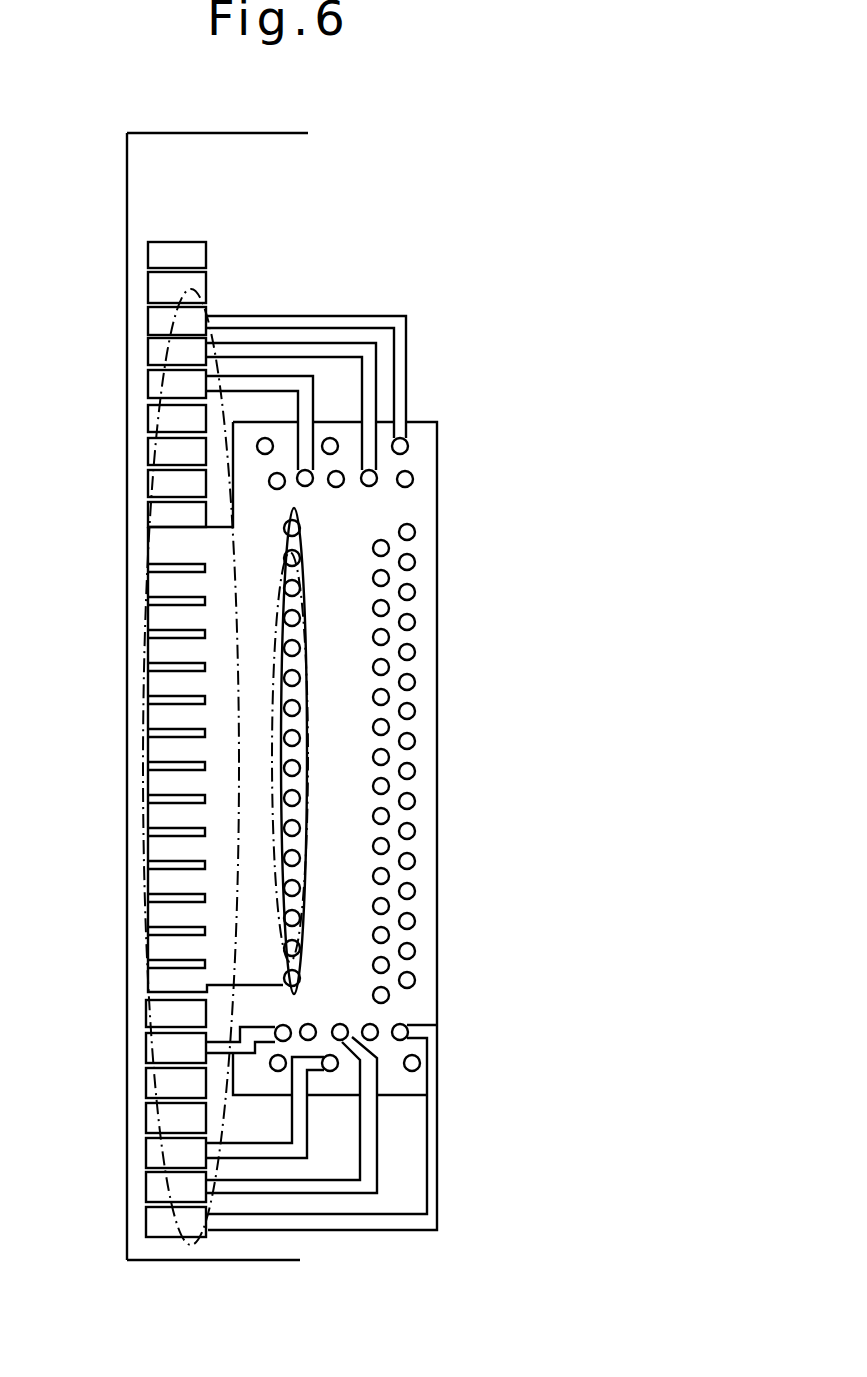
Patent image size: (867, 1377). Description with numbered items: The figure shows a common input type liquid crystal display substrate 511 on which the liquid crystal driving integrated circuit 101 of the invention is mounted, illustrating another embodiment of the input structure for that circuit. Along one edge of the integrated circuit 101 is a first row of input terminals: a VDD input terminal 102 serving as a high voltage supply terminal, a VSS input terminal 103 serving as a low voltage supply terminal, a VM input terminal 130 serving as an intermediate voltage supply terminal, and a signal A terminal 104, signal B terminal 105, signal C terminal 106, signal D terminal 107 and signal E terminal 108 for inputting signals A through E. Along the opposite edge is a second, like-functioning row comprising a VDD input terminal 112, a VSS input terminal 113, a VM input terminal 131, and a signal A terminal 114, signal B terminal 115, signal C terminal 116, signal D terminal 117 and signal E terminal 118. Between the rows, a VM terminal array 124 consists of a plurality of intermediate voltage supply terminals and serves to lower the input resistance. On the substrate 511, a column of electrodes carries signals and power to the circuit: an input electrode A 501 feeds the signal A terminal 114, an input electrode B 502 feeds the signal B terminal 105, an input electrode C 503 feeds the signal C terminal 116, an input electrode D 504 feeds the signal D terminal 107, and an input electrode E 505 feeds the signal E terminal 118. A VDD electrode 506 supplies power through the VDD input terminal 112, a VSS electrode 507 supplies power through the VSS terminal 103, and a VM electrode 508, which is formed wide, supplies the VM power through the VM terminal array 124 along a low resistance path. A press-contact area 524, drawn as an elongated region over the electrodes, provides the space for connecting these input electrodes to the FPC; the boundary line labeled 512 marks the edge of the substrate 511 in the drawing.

The liquid crystal driving integrated circuit 101 is at (437, 615).
The VDD input terminal 102 is at (330, 454).
The VSS input terminal 103 is at (408, 445).
The signal A terminal 104 is at (270, 485).
The signal B terminal 105 is at (310, 485).
The signal C terminal 106 is at (337, 471).
The signal D terminal 107 is at (372, 486).
The signal E terminal 108 is at (413, 479).
The VDD input terminal 112 is at (331, 1071).
The VSS input terminal 113 is at (416, 1070).
The signal A terminal 114 is at (284, 1026).
The signal B terminal 115 is at (310, 1026).
The signal C terminal 116 is at (346, 1027).
The signal D terminal 117 is at (374, 1026).
The signal E terminal 118 is at (406, 1039).
The VM terminal array 124 is at (308, 675).
The VM input terminal 130 is at (257, 450).
The VM input terminal 131 is at (270, 1065).
The input electrode A 501 is at (146, 1048).
The input electrode B 502 is at (148, 385).
The input electrode C 503 is at (146, 1187).
The input electrode D 504 is at (148, 352).
The input electrode E 505 is at (146, 1222).
The VDD electrode 506 is at (146, 1153).
The VSS electrode 507 is at (148, 320).
The VM electrode 508 is at (148, 688).
The liquid crystal display substrate 511 is at (198, 135).
The board edge 512 is at (127, 580).
The press-contact area 524 is at (203, 291).